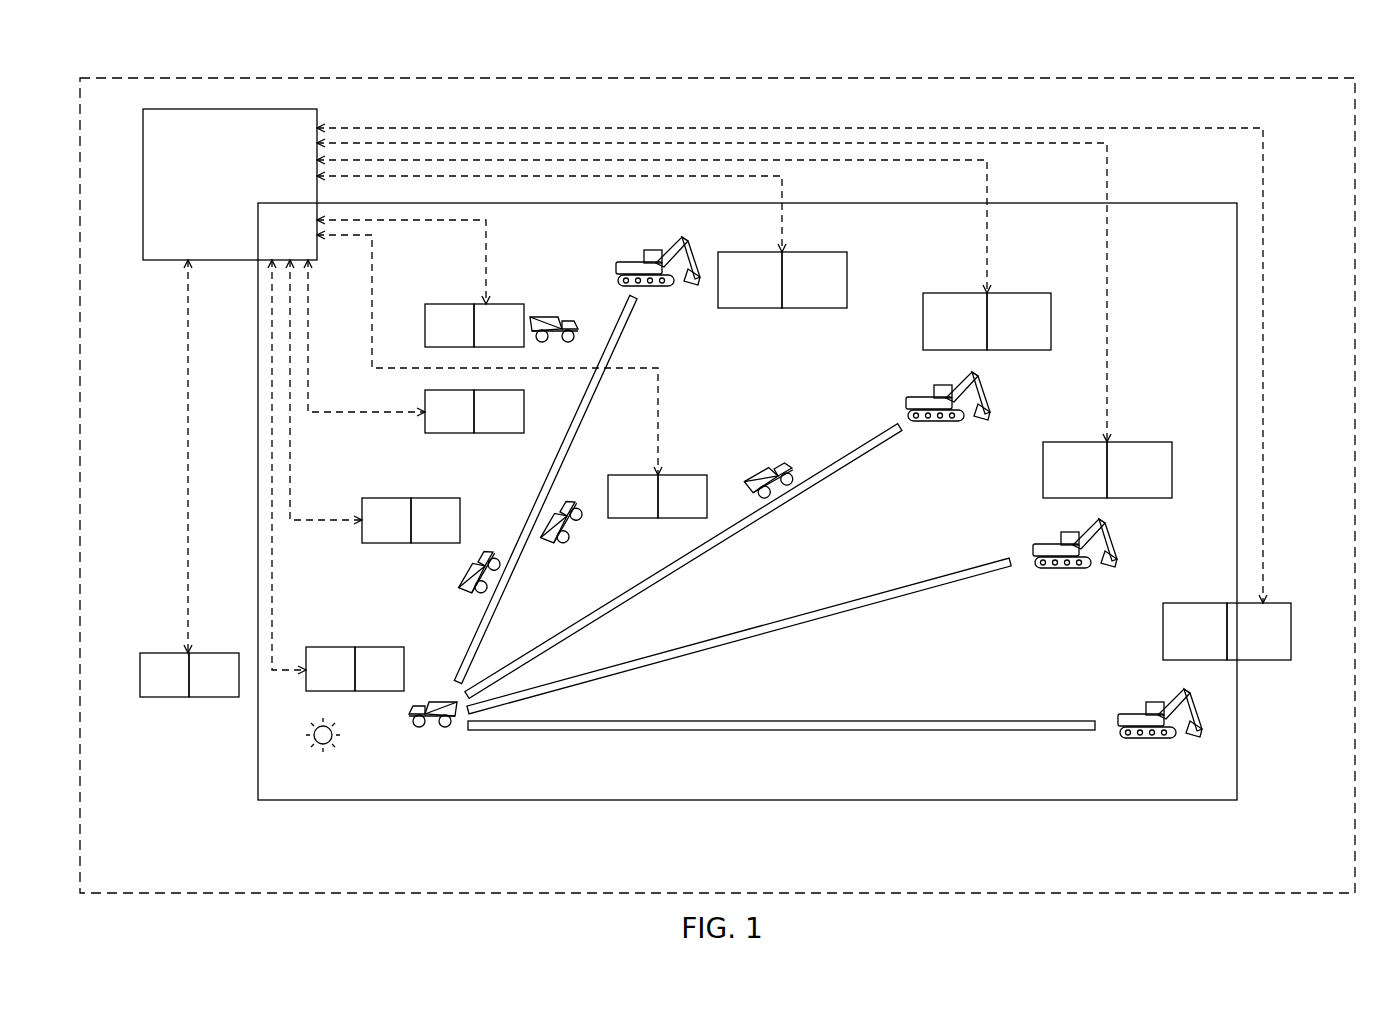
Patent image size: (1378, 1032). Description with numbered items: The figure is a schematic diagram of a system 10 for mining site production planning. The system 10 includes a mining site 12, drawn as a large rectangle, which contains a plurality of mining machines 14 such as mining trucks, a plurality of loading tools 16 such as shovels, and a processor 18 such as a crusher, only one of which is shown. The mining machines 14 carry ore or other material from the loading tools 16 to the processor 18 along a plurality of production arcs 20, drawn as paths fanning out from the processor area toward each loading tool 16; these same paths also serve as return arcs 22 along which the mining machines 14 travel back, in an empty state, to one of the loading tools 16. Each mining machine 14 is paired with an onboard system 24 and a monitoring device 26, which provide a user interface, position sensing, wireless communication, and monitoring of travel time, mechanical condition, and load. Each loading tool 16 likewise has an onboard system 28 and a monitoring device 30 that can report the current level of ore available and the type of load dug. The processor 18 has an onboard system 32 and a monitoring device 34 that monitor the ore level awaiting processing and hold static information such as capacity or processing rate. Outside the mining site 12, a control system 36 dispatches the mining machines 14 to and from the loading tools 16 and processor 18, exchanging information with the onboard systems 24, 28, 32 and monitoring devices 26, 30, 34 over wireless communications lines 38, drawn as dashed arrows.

The system 10 is at (1180, 78).
The mining site 12 is at (425, 800).
The mining machine 14 is at (552, 306).
The loading tool 16 is at (654, 290).
The processor 18 is at (336, 743).
The production arc 20 is at (490, 606).
The return arc 22 is at (596, 396).
The onboard system 24 is at (482, 497).
The monitoring device 26 is at (531, 497).
The onboard system 28 is at (972, 456).
The monitoring device 30 is at (1036, 456).
The onboard system 32 is at (164, 675).
The monitoring device 34 is at (214, 675).
The control system 36 is at (230, 184).
The wireless communications line 38 is at (782, 194).